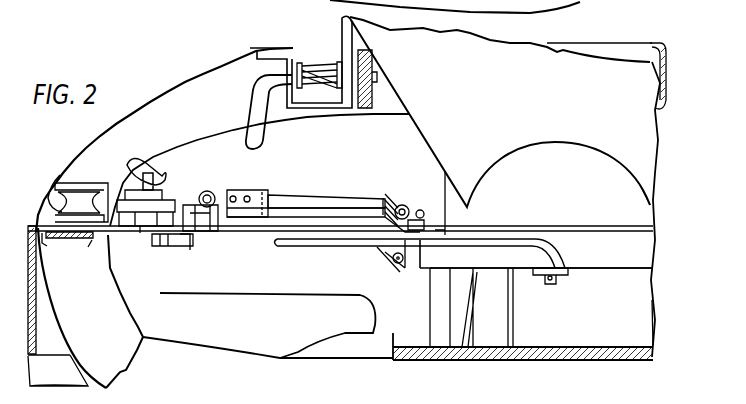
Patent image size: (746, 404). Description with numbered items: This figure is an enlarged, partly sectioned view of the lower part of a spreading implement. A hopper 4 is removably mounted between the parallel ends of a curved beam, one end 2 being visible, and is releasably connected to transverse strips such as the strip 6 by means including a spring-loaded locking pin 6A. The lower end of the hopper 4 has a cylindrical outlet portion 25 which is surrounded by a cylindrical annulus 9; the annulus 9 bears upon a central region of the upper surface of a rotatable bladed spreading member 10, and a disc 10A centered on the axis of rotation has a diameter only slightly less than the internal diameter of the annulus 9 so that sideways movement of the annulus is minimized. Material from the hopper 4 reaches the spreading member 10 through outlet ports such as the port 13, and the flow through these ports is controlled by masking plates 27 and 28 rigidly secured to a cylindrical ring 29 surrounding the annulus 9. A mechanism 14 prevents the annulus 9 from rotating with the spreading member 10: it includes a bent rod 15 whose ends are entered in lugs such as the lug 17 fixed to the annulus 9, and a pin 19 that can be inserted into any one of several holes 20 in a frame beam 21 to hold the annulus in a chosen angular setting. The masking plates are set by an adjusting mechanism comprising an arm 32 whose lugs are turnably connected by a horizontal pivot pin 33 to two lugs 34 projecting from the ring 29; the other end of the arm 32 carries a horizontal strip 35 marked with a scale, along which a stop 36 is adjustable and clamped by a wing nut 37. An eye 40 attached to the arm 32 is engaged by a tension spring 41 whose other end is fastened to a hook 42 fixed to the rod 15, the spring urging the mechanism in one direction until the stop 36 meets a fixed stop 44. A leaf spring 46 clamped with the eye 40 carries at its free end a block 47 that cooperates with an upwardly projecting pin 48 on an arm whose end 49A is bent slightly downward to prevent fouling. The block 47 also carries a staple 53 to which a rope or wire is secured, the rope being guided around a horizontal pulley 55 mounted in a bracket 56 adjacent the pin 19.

The end 2 is at (640, 45).
The hopper 4 is at (425, 135).
The transverse strip 6 is at (373, 103).
The spring-loaded locking pin 6A is at (314, 65).
The cylindrical annulus 9 is at (644, 328).
The spreading member 10 is at (312, 363).
The disc 10A is at (455, 362).
The outlet port 13 is at (476, 322).
The mechanism 14 is at (31, 216).
The bent rod 15 is at (330, 247).
The lug 17 is at (567, 280).
The pin 19 is at (46, 246).
The holes 20 is at (82, 240).
The frame beam 21 is at (81, 261).
The outlet portion 25 is at (650, 215).
The masking plate 27 is at (432, 321).
The masking plate 28 is at (514, 324).
The cylindrical ring 29 is at (650, 257).
The arm 32 is at (330, 212).
The horizontal pivot pin 33 is at (400, 264).
The lugs 34 is at (385, 262).
The strip 35 is at (170, 200).
The stop 36 is at (140, 235).
The wing nut 37 is at (140, 160).
The eye 40 is at (386, 198).
The tension spring 41 is at (403, 205).
The hook 42 is at (423, 216).
The stop 44 is at (120, 192).
The leaf spring 46 is at (300, 196).
The block 47 is at (232, 186).
The pin 48 is at (163, 248).
The end 49A is at (190, 251).
The staple 53 is at (207, 190).
The pulley 55 is at (48, 185).
The bracket 56 is at (58, 180).